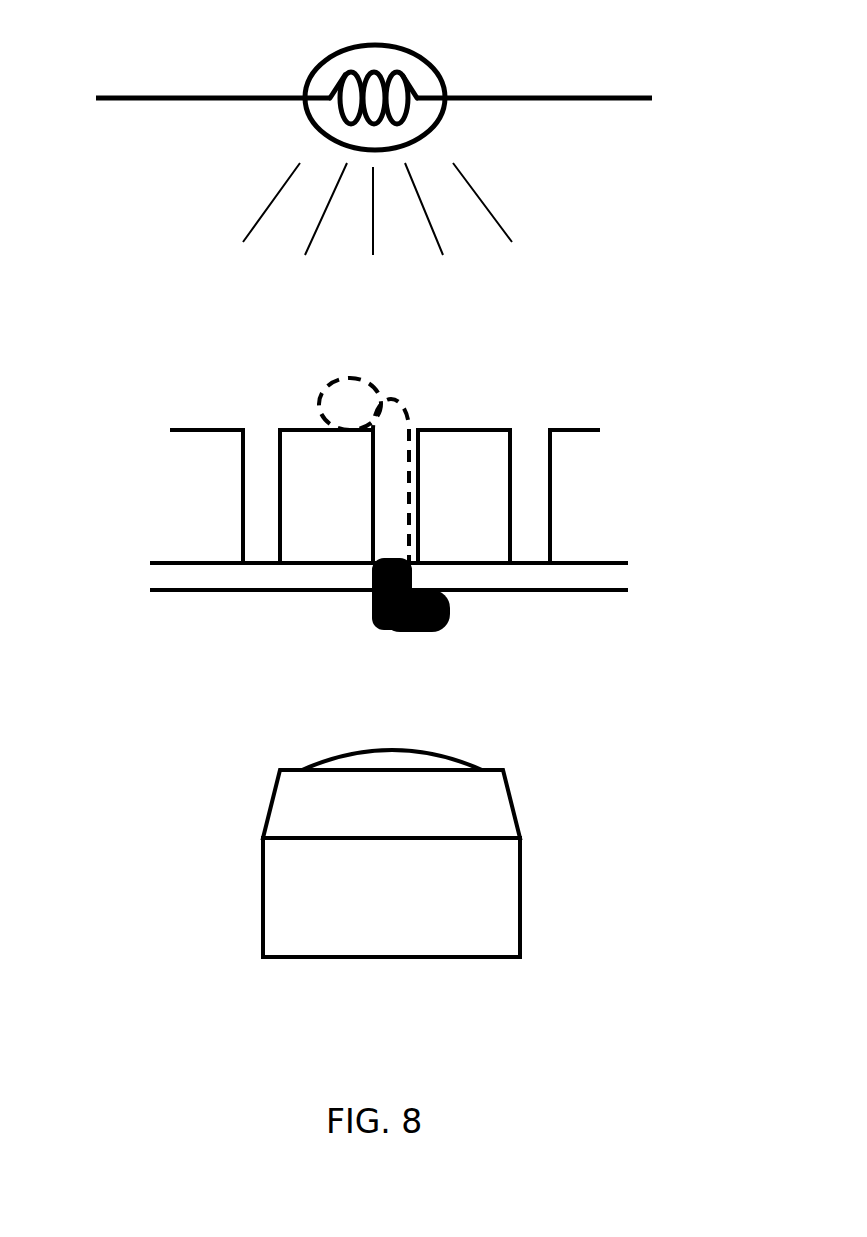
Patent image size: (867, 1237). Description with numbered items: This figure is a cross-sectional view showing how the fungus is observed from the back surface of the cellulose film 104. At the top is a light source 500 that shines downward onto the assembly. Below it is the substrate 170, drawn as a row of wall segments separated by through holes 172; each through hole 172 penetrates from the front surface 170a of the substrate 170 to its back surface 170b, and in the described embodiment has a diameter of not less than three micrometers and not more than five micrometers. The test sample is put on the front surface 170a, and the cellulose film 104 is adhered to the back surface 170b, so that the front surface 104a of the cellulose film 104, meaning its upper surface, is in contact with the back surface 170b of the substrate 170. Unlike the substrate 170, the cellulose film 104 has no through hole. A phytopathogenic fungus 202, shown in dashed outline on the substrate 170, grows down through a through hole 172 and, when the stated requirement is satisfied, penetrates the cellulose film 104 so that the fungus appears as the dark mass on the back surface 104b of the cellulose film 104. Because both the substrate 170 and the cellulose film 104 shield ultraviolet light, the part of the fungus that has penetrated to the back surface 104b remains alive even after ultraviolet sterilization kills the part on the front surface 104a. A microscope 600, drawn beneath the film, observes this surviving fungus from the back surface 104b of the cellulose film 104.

The light source 500 is at (437, 70).
The phytopathogenic fungus 202 is at (320, 393).
The substrate 170 is at (580, 425).
The front surface 170a is at (447, 427).
The back surface 170b is at (463, 563).
The through hole 172 is at (268, 537).
The cellulose film 104 is at (597, 575).
The front surface 104a is at (525, 562).
The back surface 104b is at (358, 592).
The microscope 600 is at (280, 898).